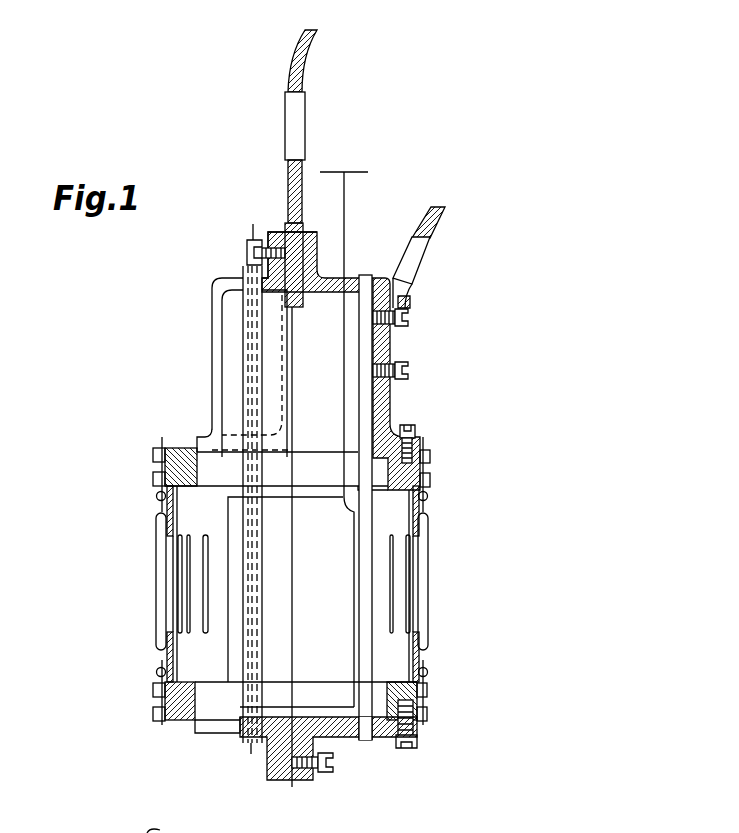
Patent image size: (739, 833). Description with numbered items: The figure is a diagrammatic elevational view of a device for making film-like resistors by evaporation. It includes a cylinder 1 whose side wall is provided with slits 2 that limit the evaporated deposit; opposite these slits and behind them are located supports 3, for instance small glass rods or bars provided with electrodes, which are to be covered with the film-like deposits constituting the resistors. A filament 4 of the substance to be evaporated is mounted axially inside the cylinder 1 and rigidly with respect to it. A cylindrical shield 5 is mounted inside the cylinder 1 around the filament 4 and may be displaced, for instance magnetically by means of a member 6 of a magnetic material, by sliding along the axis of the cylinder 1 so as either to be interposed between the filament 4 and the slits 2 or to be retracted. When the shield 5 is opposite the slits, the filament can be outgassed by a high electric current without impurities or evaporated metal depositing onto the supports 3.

The cylinder 1 is at (205, 653).
The slits 2 is at (208, 537).
The supports 3 is at (423, 552).
The filament 4 is at (292, 692).
The cylindrical shield 5 is at (235, 688).
The member of a magnetic material 6 is at (339, 368).